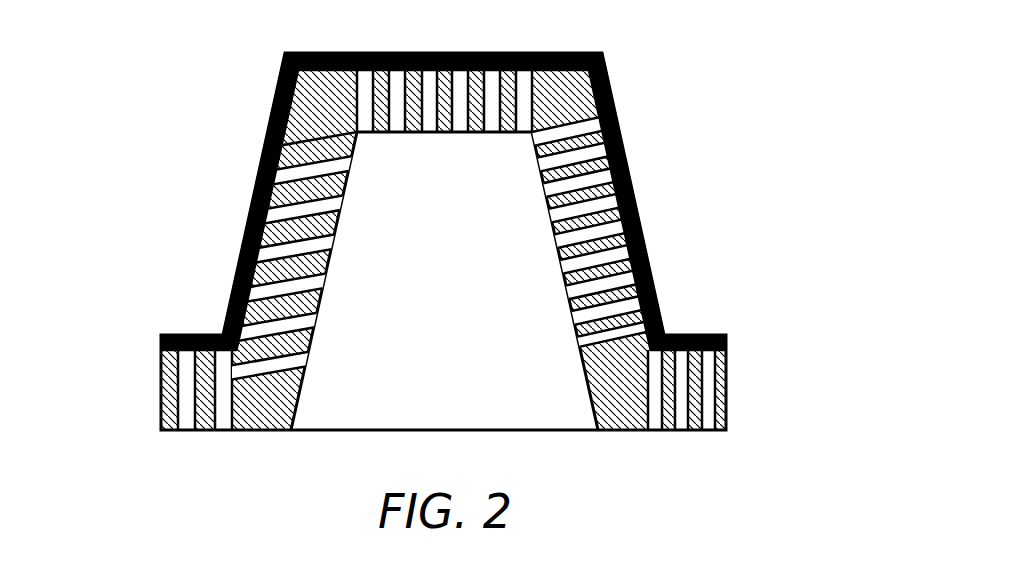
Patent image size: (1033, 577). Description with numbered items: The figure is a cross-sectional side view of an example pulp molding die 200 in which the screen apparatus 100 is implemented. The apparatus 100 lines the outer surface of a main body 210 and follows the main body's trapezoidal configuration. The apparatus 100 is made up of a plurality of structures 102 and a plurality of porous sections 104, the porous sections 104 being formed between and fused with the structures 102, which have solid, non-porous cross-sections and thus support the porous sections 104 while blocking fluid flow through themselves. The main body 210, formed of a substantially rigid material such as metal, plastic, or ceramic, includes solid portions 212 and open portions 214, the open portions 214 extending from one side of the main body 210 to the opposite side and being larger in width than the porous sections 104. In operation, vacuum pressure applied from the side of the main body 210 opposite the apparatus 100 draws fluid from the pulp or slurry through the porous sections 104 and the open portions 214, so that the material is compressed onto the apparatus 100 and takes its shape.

The apparatus 100 is at (389, 183).
The structures 102 is at (144, 296).
The porous sections 104 is at (262, 194).
The pulp molding die 200 is at (455, 267).
The main body 210 is at (471, 292).
The solid portions 212 is at (268, 430).
The open portions 214 is at (517, 133).